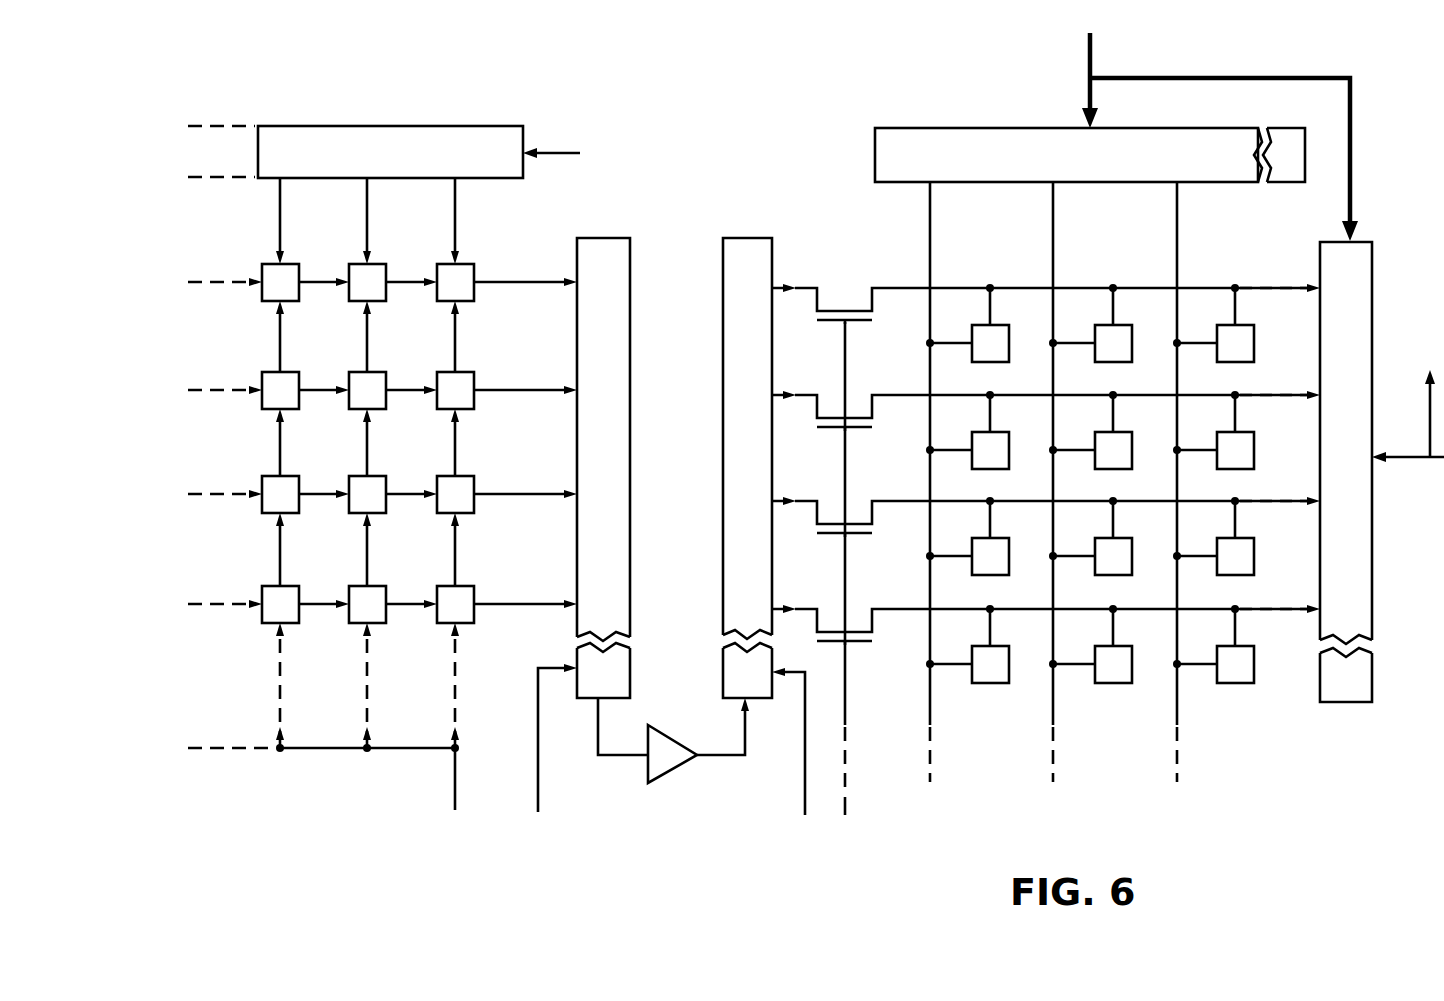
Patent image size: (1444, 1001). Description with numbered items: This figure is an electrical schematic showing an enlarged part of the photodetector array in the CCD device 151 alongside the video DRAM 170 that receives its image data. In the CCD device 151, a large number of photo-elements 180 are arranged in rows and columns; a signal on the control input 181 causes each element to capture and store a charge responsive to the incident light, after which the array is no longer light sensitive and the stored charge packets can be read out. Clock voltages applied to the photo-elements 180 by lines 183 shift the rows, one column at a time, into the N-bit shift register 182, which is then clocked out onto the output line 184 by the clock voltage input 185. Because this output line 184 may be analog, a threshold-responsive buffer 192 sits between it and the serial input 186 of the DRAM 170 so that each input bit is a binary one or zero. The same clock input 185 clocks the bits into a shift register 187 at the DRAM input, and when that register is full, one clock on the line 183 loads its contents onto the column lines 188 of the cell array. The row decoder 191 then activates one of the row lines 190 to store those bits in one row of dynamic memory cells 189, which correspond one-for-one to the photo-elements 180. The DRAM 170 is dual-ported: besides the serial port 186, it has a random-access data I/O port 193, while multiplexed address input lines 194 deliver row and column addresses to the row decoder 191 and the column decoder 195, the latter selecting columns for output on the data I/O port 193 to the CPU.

The CCD device 151 is at (365, 125).
The video DRAM 170 is at (873, 209).
The photo-elements 180 is at (268, 371).
The control input 181 is at (558, 148).
The N-bit shift register 182 is at (608, 242).
The clock lines 183 is at (445, 790).
The output line 184 is at (618, 757).
The clock voltage input 185 is at (533, 790).
The serial input 186 is at (723, 757).
The shift register 187 is at (745, 242).
The column lines 188 is at (912, 291).
The dynamic memory cells 189 is at (992, 683).
The row lines 190 is at (928, 255).
The row decoder 191 is at (900, 140).
The threshold-responsive buffer 192 is at (677, 737).
The data I/O port 193 is at (1417, 459).
The address input lines 194 is at (1085, 58).
The column decoder 195 is at (1370, 240).